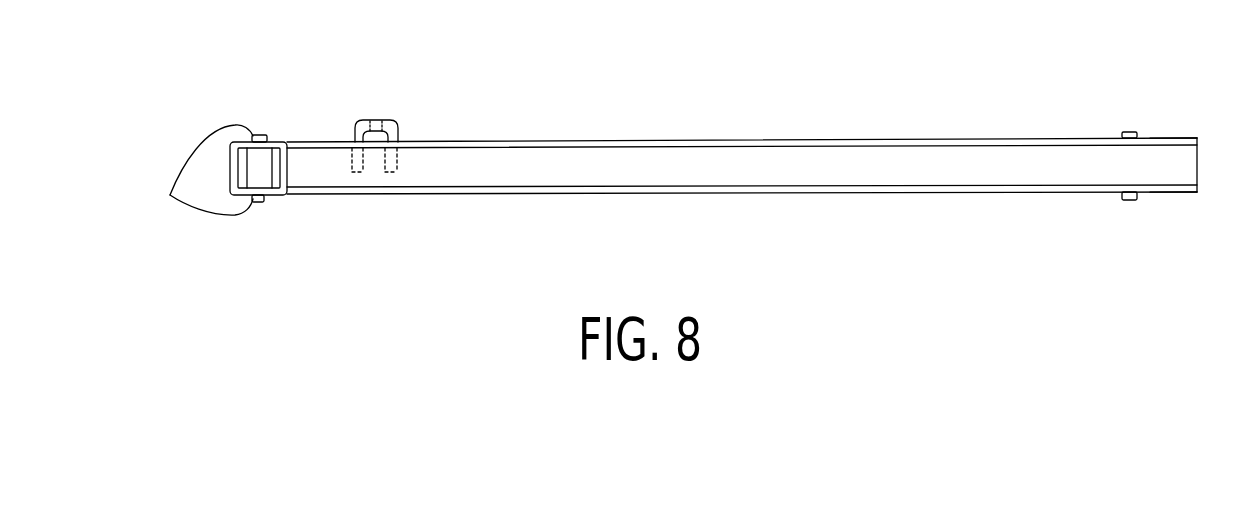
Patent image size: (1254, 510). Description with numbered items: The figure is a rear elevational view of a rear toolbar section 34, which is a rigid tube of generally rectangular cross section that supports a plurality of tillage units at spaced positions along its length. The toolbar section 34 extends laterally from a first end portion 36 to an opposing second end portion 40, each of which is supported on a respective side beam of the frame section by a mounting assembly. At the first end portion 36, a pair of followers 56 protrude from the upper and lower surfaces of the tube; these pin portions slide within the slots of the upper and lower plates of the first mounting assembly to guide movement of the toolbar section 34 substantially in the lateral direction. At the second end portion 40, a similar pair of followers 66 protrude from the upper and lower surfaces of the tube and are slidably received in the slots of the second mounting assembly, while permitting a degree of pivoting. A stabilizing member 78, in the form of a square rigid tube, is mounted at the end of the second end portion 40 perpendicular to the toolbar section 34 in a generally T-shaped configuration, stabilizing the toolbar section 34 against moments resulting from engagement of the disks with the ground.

The toolbar section 34 is at (683, 102).
The first end portion 36 is at (1092, 258).
The second end portion 40 is at (330, 273).
The followers 56 is at (1127, 192).
The followers 66 is at (190, 172).
The stabilizing member 78 is at (273, 140).